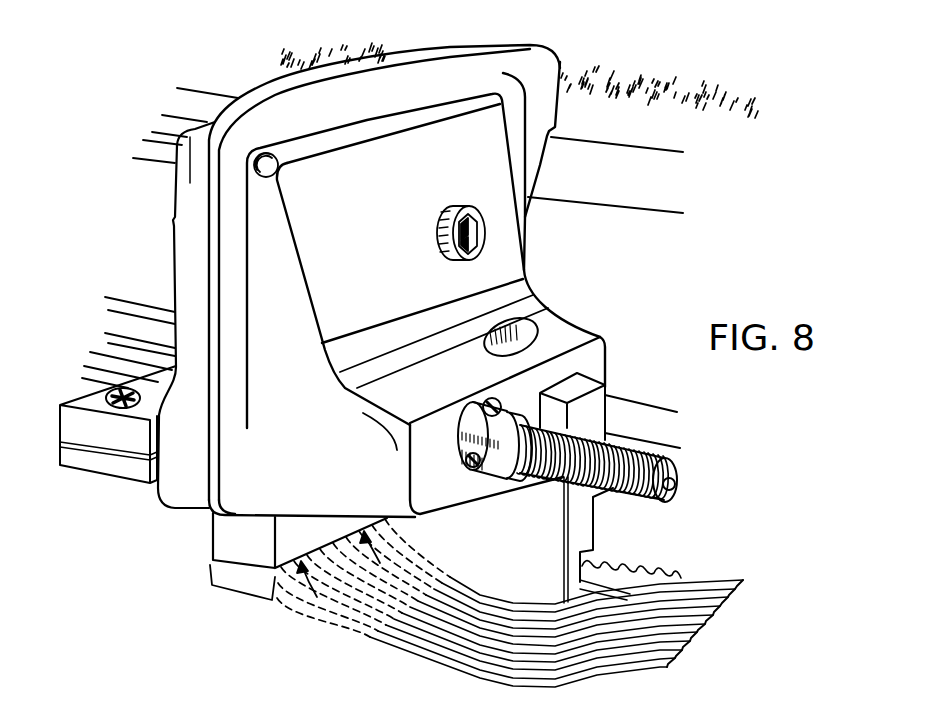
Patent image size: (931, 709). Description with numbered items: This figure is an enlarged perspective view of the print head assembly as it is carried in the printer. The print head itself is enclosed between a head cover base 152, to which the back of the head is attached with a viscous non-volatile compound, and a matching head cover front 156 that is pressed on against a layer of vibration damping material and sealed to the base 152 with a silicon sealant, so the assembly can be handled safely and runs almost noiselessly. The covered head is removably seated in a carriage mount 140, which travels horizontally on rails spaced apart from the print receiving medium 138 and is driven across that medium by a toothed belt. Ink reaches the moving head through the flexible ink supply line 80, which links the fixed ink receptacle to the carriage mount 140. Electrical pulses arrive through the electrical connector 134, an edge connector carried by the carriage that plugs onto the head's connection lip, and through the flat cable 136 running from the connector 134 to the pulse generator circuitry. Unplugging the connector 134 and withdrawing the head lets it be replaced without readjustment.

The flexible ink supply line 80 is at (563, 474).
The electrical connector 134 is at (220, 537).
The flat cable 136 is at (652, 593).
The print receiving medium 138 is at (648, 82).
The carriage mount 140 is at (610, 349).
The head cover base 152 is at (227, 243).
The head cover front 156 is at (183, 190).